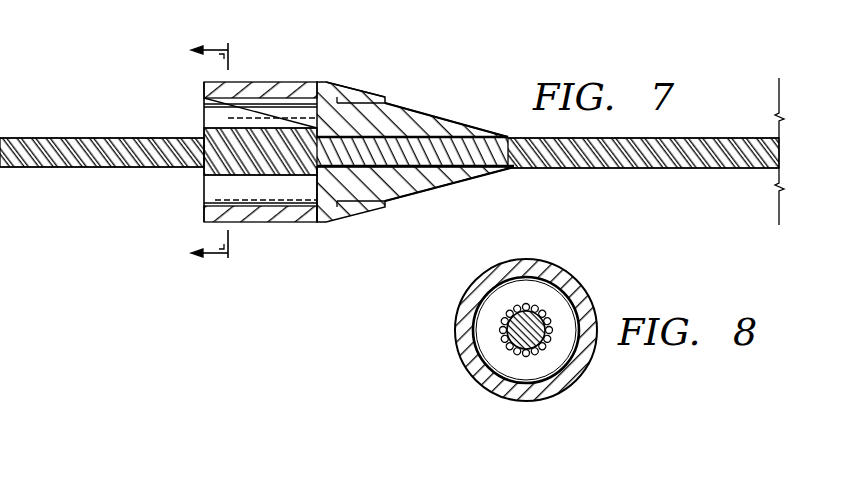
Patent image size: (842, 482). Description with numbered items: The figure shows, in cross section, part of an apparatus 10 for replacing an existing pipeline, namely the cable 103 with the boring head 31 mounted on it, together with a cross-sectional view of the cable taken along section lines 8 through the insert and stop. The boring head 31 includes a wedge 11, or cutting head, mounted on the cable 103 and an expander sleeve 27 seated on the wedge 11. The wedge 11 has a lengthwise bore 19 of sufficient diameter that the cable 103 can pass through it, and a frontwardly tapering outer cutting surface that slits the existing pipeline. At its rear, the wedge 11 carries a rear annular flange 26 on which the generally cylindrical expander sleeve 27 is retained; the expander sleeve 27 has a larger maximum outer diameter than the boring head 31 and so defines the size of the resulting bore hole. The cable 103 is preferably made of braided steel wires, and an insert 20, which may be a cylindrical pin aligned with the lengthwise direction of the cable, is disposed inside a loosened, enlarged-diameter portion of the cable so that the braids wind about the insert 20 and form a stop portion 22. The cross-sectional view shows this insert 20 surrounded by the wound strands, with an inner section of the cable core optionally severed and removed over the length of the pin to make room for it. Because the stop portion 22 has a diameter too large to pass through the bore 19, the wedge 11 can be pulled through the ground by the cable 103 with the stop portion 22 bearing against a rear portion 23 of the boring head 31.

In FIG. 7, the section lines 8— 8 is at (213, 153).
In FIG. 7, the apparatus 10 is at (432, 50).
In FIG. 7, the wedge 11 is at (448, 123).
In FIG. 8, the wedge 11 is at (558, 270).
In FIG. 7, the lengthwise bore 19 is at (413, 160).
In FIG. 8, the insert 20 is at (503, 350).
In FIG. 7, the stop portion 22 is at (240, 176).
In FIG. 8, the stop portion 22 is at (505, 317).
In FIG. 7, the rear portion 23 is at (315, 196).
In FIG. 7, the rear annular flange 26 is at (328, 103).
In FIG. 7, the expander sleeve 27 is at (295, 82).
In FIG. 7, the boring head 31 is at (362, 80).
In FIG. 7, the cable 103 is at (97, 138).
In FIG. 8, the cable 103 is at (548, 342).